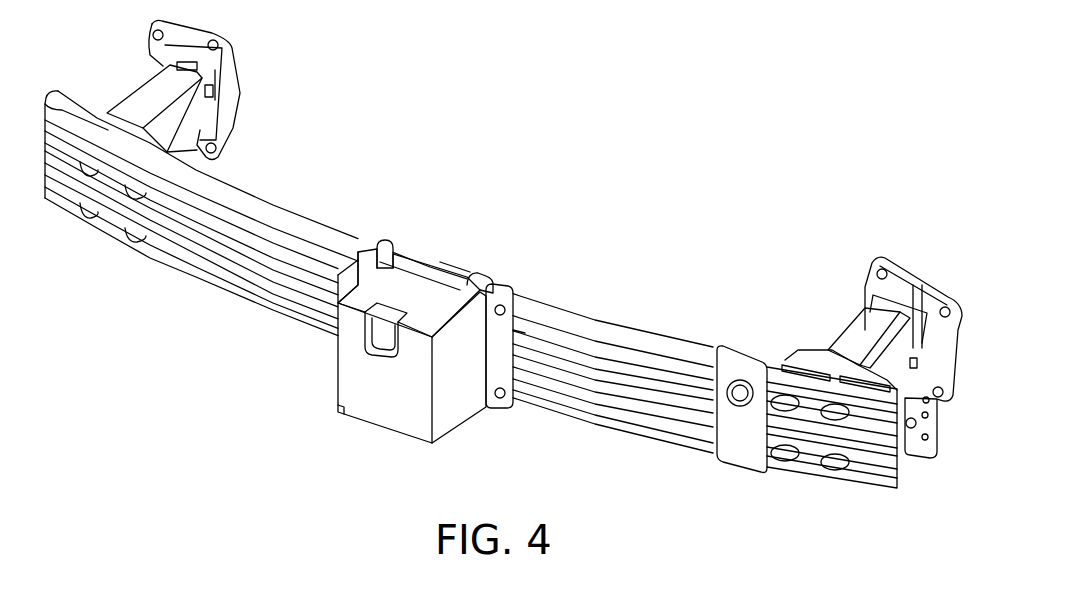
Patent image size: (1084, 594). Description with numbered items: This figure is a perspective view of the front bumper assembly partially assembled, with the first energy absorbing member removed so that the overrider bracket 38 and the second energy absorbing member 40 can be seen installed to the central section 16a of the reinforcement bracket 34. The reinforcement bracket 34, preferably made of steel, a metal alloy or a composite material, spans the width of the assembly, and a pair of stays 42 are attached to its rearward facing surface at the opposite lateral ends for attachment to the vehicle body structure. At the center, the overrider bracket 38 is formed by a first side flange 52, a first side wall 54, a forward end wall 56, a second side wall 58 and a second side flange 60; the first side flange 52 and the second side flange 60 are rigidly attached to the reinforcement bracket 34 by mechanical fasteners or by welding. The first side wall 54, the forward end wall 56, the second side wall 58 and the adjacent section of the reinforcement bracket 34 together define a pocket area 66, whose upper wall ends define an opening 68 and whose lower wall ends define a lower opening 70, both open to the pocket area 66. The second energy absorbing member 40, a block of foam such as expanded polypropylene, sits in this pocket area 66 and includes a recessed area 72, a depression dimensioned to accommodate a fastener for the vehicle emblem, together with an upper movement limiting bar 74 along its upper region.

The central section 16a is at (433, 246).
The reinforcement bracket 34 is at (624, 333).
The overrider bracket 38 is at (510, 284).
The second energy absorbing member 40 is at (422, 297).
The stays 42 is at (148, 92).
The first side flange 52 is at (360, 272).
The first side wall 54 is at (335, 300).
The forward end wall 56 is at (405, 403).
The second side wall 58 is at (457, 397).
The second side flange 60 is at (500, 347).
The pocket area 66 is at (398, 254).
The opening 68 is at (453, 305).
The lower opening 70 is at (358, 417).
The recessed area 72 is at (393, 320).
The upper movement limiting bar 74 is at (447, 267).